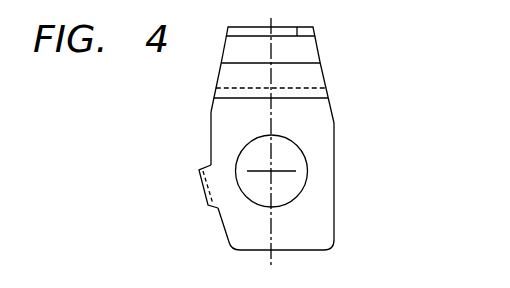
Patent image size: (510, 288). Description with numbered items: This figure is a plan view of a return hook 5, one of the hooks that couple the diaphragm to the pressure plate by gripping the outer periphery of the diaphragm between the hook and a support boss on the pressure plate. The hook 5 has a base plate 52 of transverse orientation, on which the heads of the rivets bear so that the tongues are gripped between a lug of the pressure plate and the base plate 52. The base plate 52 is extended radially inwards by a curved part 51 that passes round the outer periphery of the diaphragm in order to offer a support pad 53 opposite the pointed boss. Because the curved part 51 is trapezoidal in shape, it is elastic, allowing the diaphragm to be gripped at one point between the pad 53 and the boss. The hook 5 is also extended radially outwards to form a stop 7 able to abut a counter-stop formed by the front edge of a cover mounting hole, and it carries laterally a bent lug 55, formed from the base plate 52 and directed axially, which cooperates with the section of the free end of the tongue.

The return hook 5 is at (267, 141).
The stop 7 is at (322, 227).
The curved part 51 is at (310, 75).
The base plate 52 is at (320, 127).
The support pad 53 is at (303, 30).
The bent lug 55 is at (202, 190).